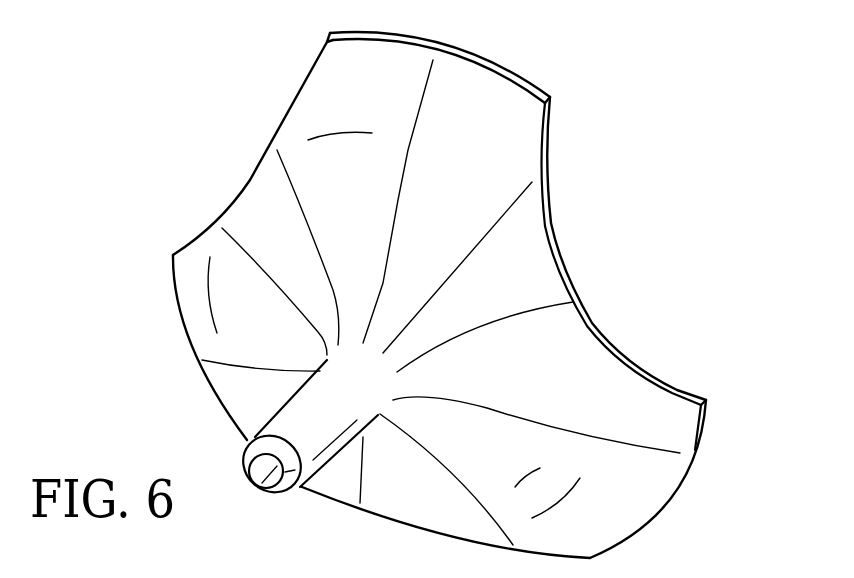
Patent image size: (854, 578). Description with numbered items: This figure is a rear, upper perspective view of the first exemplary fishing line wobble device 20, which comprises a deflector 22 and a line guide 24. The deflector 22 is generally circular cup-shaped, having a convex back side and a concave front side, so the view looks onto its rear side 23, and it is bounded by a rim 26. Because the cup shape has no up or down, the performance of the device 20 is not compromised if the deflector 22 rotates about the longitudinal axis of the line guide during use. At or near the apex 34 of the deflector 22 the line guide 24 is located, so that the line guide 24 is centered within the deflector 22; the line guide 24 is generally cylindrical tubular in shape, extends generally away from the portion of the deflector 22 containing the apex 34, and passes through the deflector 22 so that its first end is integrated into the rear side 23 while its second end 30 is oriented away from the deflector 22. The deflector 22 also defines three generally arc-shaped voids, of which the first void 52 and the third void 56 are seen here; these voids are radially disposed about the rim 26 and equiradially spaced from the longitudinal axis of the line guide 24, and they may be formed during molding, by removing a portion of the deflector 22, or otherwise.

The fishing line wobble device 20 is at (651, 151).
The deflector 22 is at (631, 503).
The rear side 23 is at (496, 383).
The line guide 24 is at (318, 460).
The rim 26 is at (457, 47).
The second end 30 is at (280, 462).
The apex 34 is at (390, 404).
The first void 52 is at (610, 257).
The third void 56 is at (185, 167).